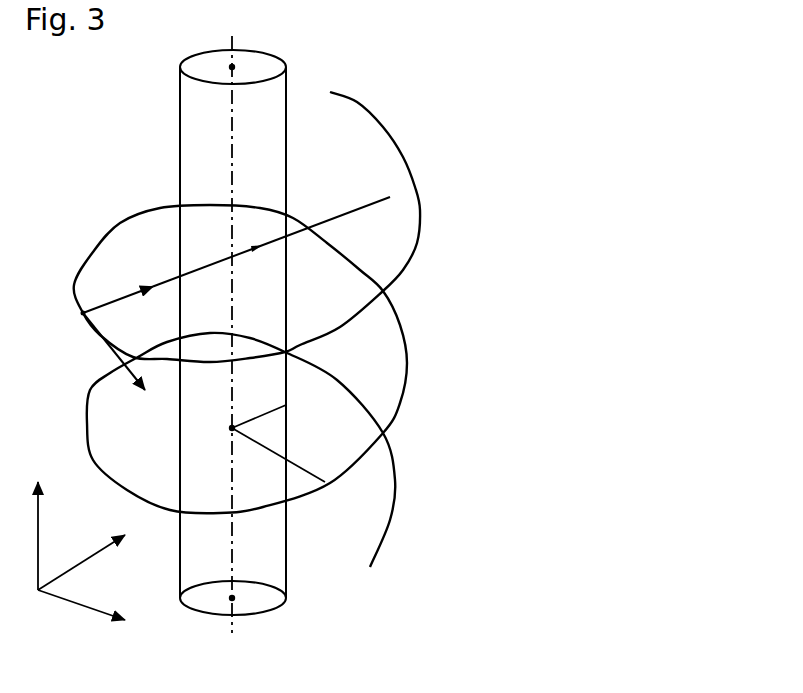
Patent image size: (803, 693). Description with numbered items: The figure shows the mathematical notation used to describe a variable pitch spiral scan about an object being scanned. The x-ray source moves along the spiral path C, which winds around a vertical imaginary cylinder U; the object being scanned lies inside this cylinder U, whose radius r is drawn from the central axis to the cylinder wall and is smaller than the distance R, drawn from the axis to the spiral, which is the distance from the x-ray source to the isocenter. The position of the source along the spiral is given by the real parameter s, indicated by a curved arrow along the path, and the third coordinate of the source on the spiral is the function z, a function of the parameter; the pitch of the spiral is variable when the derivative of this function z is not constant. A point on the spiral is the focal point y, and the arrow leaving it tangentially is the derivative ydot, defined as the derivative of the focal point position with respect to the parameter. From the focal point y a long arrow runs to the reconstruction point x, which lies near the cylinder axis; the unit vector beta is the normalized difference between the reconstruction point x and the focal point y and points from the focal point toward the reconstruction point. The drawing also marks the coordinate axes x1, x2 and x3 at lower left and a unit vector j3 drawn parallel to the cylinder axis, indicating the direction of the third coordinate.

The imaginary cylinder U is at (233, 334).
The spiral path C is at (247, 328).
The third coordinate function z(s) z is at (478, 210).
The unit vector β(s,x) beta is at (236, 255).
The reconstruction point x is at (260, 262).
The focal point y(s) y is at (55, 317).
The derivative ẏ(s) ydot is at (121, 368).
The cylinder radius r is at (257, 412).
The source-to-isocenter distance R is at (278, 455).
The real parameter s is at (409, 445).
The unit vector j3 along the axis j3 is at (318, 550).
The coordinate axis x1 is at (81, 622).
The coordinate axis x2 is at (88, 562).
The coordinate axis x3 is at (55, 536).